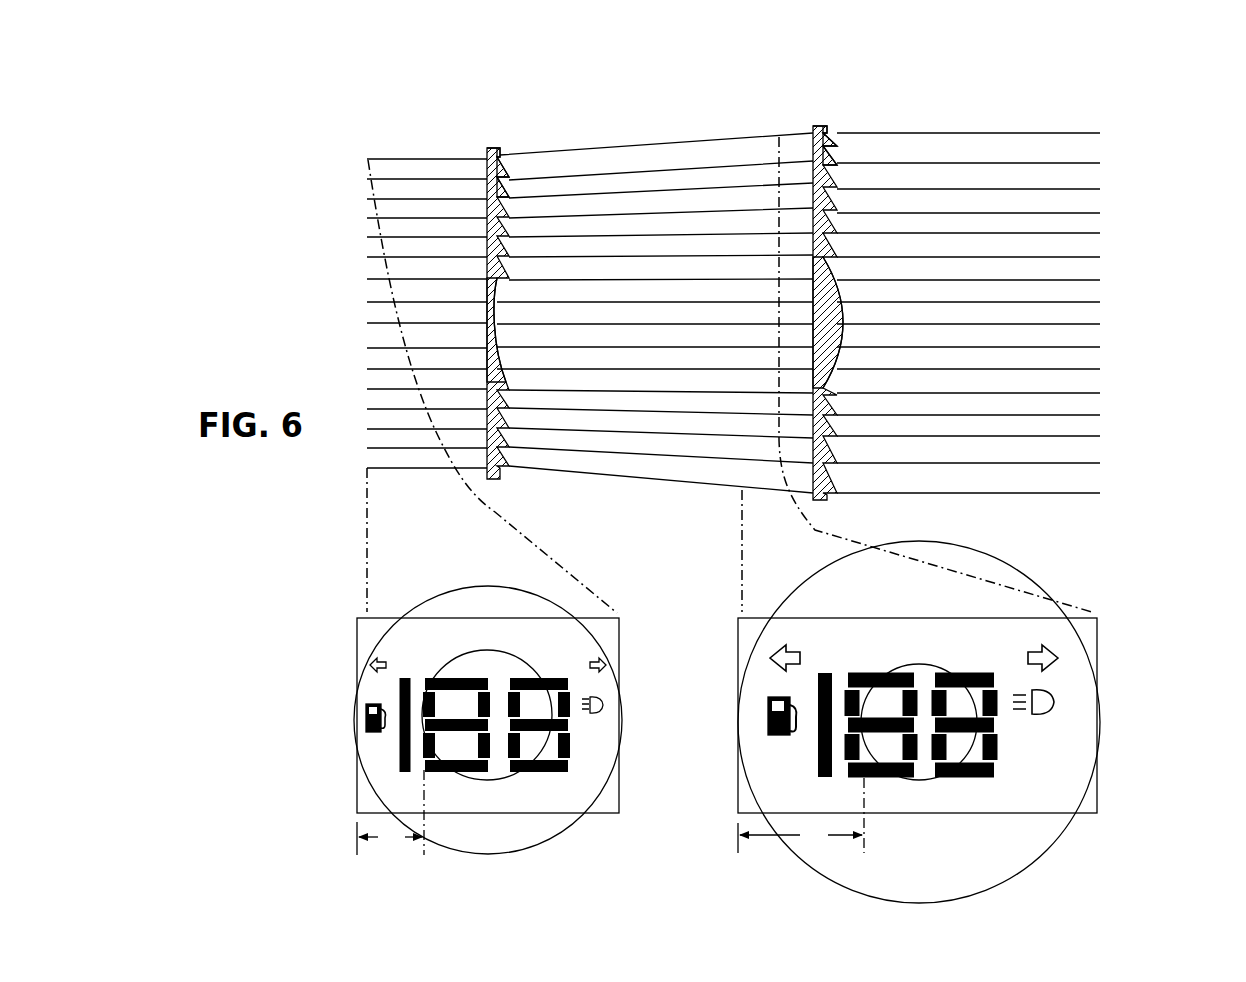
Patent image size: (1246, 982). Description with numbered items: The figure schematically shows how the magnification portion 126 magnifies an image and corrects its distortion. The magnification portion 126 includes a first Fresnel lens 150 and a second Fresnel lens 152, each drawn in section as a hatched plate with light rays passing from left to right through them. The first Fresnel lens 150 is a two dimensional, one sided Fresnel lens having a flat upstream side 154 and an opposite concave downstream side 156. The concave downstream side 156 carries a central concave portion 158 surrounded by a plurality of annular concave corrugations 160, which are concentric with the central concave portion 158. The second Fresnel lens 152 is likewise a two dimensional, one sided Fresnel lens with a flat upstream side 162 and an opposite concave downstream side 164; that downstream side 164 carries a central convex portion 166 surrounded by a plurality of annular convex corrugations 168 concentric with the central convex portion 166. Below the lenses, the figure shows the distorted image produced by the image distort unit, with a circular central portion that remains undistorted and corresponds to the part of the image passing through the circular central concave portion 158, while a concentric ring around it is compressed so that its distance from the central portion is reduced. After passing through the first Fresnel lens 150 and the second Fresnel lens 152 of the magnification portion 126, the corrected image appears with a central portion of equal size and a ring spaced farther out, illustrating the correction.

The magnification portion 126 is at (328, 122).
The first Fresnel lens 150 is at (491, 140).
The flat upstream side 154 is at (488, 150).
The concave downstream side 156 is at (500, 160).
The annular concave corrugations 160 is at (505, 175).
The central concave portion 158 is at (508, 305).
The second Fresnel lens 152 is at (820, 120).
The flat upstream side 162 is at (814, 128).
The concave downstream side 164 is at (826, 130).
The annular convex corrugations 168 is at (838, 152).
The central convex portion 166 is at (852, 305).